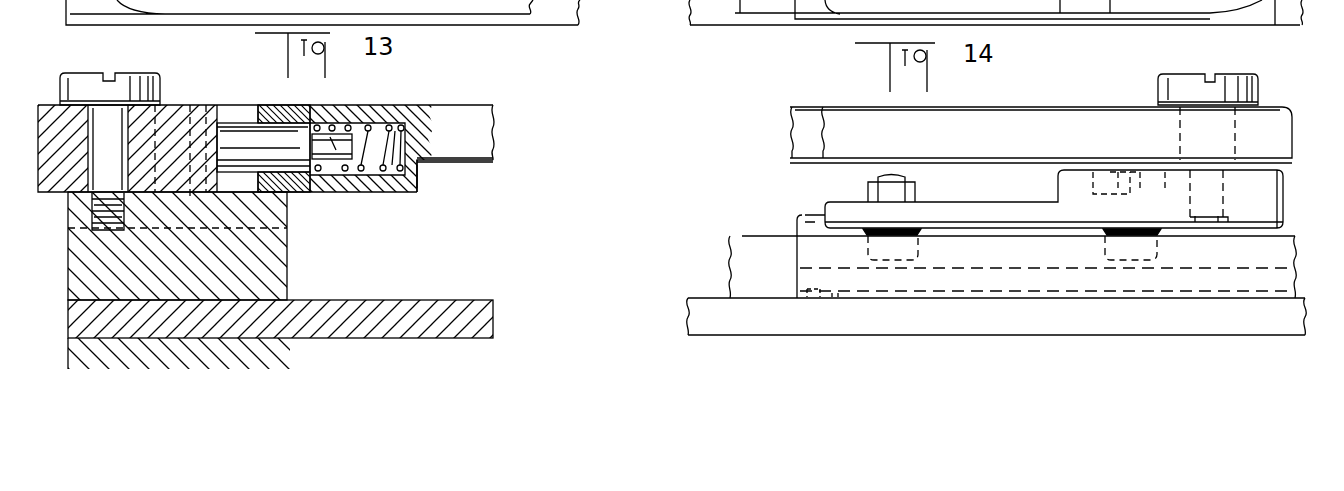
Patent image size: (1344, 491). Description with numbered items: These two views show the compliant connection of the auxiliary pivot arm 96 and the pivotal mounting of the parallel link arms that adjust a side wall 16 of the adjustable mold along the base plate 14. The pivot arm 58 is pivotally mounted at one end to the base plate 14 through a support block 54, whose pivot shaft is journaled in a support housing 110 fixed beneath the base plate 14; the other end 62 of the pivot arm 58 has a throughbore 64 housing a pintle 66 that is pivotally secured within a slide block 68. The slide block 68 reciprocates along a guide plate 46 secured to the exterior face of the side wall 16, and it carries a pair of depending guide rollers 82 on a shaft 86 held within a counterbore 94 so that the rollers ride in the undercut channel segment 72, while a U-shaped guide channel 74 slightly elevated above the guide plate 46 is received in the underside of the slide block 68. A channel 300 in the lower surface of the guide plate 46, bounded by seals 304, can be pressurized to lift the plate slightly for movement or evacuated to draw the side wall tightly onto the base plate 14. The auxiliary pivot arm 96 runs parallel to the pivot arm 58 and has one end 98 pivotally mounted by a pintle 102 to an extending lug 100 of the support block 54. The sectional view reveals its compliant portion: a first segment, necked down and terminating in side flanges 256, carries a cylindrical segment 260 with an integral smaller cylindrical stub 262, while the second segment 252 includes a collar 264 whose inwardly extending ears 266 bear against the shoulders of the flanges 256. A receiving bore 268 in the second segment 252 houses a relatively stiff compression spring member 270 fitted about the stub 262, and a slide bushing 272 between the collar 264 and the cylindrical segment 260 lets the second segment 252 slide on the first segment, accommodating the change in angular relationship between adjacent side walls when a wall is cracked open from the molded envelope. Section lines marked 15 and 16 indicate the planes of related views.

In FIG. 13, the base plate 14 is at (447, 313).
In FIG. 14, the base plate 14 is at (703, 318).
In FIG. 14, the section line 15- 15 is at (1128, 92).
In FIG. 13, the side wall 16 is at (58, 46).
In FIG. 14, the guide plate 46 is at (742, 243).
In FIG. 13, the support block 54 is at (88, 268).
In FIG. 14, the pivot arm 58 is at (858, 118).
In FIG. 14, the other end of pivot arm 62 is at (1272, 22).
In FIG. 14, the throughbore 64 is at (1178, 143).
In FIG. 14, the pintle 66 is at (1207, 196).
In FIG. 14, the slide block 68 is at (992, 208).
In FIG. 14, the undercut channel segment 72 is at (972, 268).
In FIG. 14, the U-shaped guide channel 74 is at (813, 217).
In FIG. 14, the guide rollers 82 is at (868, 248).
In FIG. 14, the shaft 86 is at (882, 178).
In FIG. 14, the counterbore 94 is at (1093, 177).
In FIG. 13, the auxiliary pivot arm 96 is at (470, 113).
In FIG. 14, the auxiliary pivot arm 96 is at (800, 114).
In FIG. 13, the one end of auxiliary pivot arm 98 is at (38, 108).
In FIG. 13, the extending lug 100 is at (183, 231).
In FIG. 13, the pintle 102 is at (101, 159).
In FIG. 13, the support housing 110 is at (287, 366).
In FIG. 13, the second segment 252 is at (426, 158).
In FIG. 13, the side flanges 256 is at (212, 104).
In FIG. 13, the cylindrical segment 260 is at (231, 135).
In FIG. 13, the cylindrical stub 262 is at (338, 165).
In FIG. 13, the collar 264 is at (231, 184).
In FIG. 13, the inwardly extending ears 266 is at (190, 195).
In FIG. 13, the receiving bore 268 is at (352, 123).
In FIG. 13, the compression spring member 270 is at (377, 168).
In FIG. 13, the slide bushing 272 is at (268, 116).
In FIG. 14, the channel 300 is at (965, 300).
In FIG. 14, the seals 304 is at (810, 300).